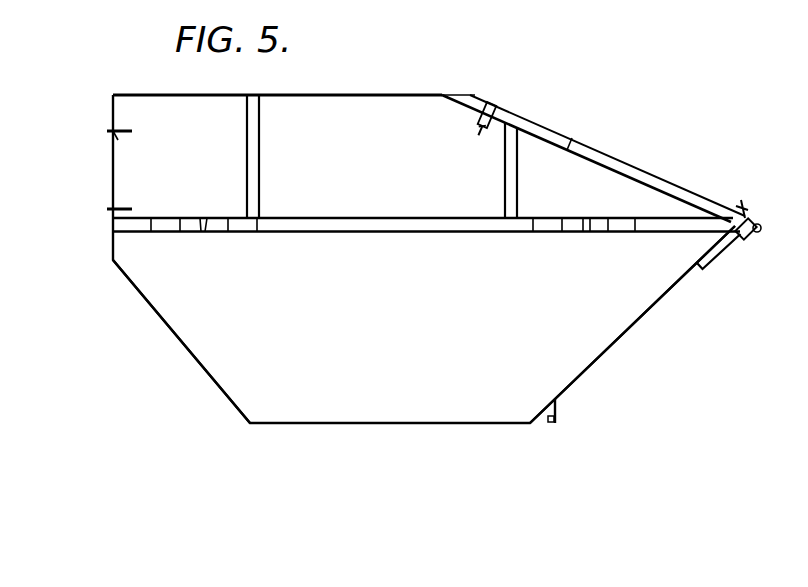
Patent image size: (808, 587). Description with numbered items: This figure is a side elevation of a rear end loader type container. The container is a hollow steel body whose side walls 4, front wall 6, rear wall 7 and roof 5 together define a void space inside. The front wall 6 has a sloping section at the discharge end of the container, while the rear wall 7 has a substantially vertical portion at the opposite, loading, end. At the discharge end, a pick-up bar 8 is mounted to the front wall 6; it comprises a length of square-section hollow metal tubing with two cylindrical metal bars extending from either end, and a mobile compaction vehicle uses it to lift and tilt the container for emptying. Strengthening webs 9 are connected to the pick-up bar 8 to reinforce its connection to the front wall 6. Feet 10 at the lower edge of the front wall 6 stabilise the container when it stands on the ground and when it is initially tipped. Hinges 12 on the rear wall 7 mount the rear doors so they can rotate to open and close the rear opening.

The side walls 4 is at (382, 345).
The roof 5 is at (313, 93).
The front wall 6 is at (645, 318).
The rear wall 7 is at (160, 327).
The pick-up bar 8 is at (760, 226).
The strengthening webs 9 is at (725, 250).
The feet 10 is at (560, 405).
The hinges 12 is at (114, 133).